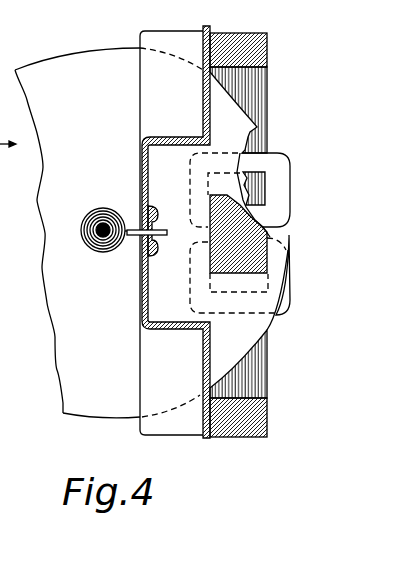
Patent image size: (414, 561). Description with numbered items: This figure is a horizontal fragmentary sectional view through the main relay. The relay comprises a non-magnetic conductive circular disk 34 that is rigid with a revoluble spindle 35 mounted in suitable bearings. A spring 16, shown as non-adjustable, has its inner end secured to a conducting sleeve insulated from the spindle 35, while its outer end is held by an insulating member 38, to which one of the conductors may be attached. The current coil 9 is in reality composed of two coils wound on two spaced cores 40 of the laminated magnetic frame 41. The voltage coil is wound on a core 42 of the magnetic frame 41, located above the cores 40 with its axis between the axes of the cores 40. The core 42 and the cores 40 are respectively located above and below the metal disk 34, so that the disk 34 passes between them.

The current coil 9 is at (283, 157).
The spring 16 is at (102, 209).
The non-magnetic conductive circular disk 34 is at (48, 296).
The revoluble spindle 35 is at (98, 249).
The insulating member 38 is at (156, 220).
The cores 40 is at (257, 192).
The laminated magnetic frame 41 is at (261, 437).
The core 42 is at (209, 262).